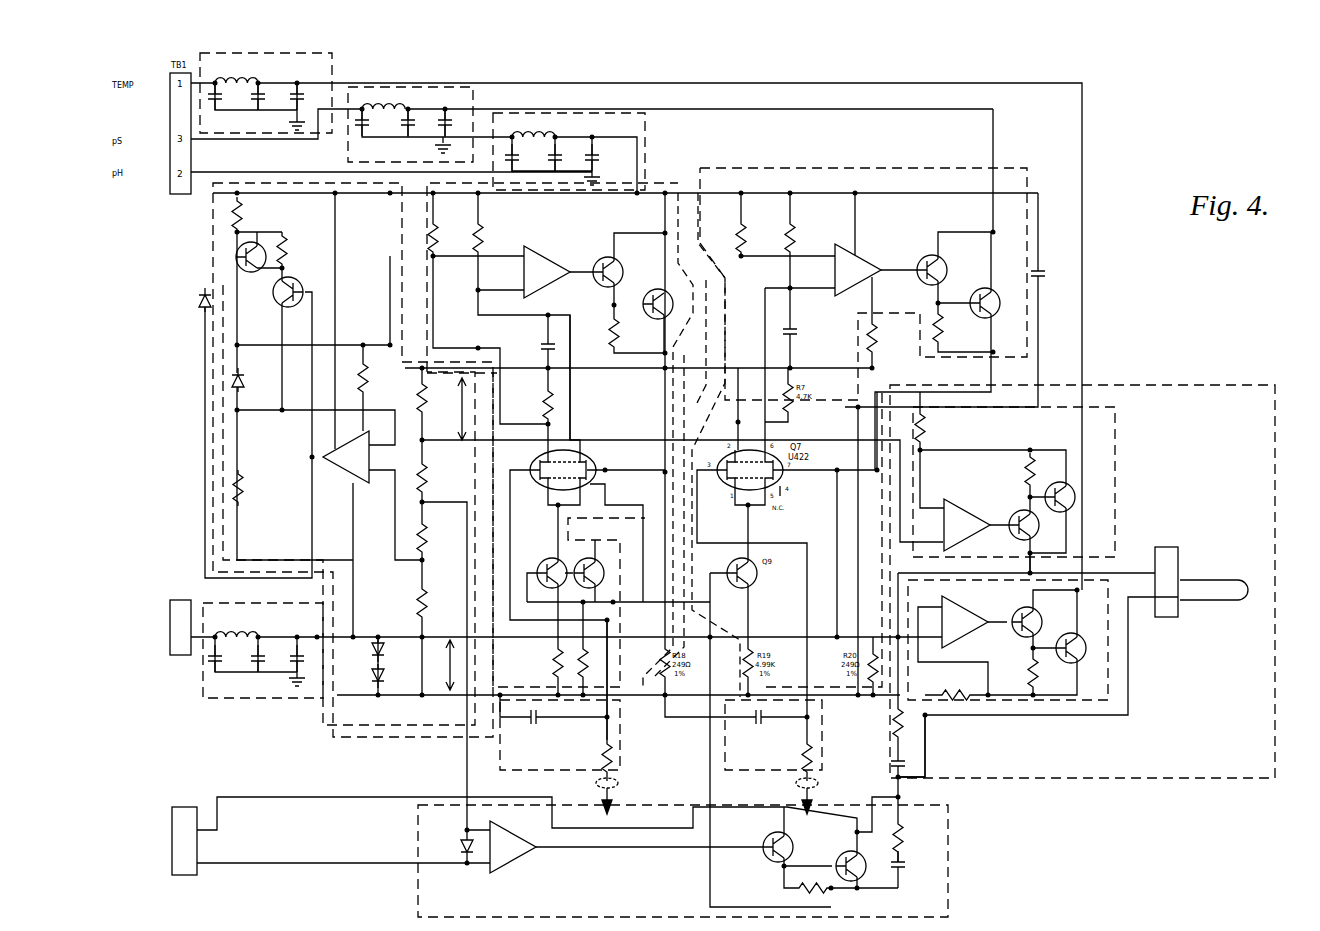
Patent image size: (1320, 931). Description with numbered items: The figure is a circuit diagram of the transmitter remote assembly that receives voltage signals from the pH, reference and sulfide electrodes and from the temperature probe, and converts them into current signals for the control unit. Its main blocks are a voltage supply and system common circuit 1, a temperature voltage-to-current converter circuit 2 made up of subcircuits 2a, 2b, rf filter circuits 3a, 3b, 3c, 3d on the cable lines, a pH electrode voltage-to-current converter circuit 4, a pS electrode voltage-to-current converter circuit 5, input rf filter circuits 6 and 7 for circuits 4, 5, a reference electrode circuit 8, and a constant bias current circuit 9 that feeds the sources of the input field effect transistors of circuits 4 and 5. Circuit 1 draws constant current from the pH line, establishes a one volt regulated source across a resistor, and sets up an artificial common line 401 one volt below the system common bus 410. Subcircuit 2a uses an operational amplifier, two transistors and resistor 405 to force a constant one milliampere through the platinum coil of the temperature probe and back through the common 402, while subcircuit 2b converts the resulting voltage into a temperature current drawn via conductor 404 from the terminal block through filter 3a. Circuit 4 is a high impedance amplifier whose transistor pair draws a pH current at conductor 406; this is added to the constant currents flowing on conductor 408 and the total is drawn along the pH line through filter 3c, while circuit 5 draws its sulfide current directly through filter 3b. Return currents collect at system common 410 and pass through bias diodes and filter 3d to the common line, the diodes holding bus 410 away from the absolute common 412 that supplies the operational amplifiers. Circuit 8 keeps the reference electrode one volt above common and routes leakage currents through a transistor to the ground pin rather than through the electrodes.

The voltage supply and system common circuit 1 is at (213, 215).
The temperature voltage-to-current converter circuit 2 is at (1275, 385).
The temperature current converter subcircuit 2a is at (1036, 482).
The temperature voltage-to-current converter subcircuit 2b is at (1108, 680).
The rf filter circuit 3a is at (332, 56).
The rf filter circuit 3b is at (473, 92).
The rf filter circuit 3c is at (645, 115).
The rf filter circuit 3d is at (203, 698).
The pH electrode voltage-to-current converter circuit 4 is at (665, 190).
The pS electrode voltage-to-current converter circuit 5 is at (852, 168).
The input rf filter circuit 6 is at (500, 770).
The input rf filter circuit 7 is at (725, 768).
The reference electrode circuit 8 is at (562, 917).
The constant bias current circuit 9 is at (680, 368).
The artificial common line 401 is at (446, 492).
The common 402 is at (925, 715).
The conductor 404 is at (1082, 83).
The resistor 405 is at (986, 444).
The conductor 406 is at (665, 214).
The conductor 408 is at (283, 195).
The system common bus 410 is at (457, 700).
The absolute common 412 is at (500, 628).